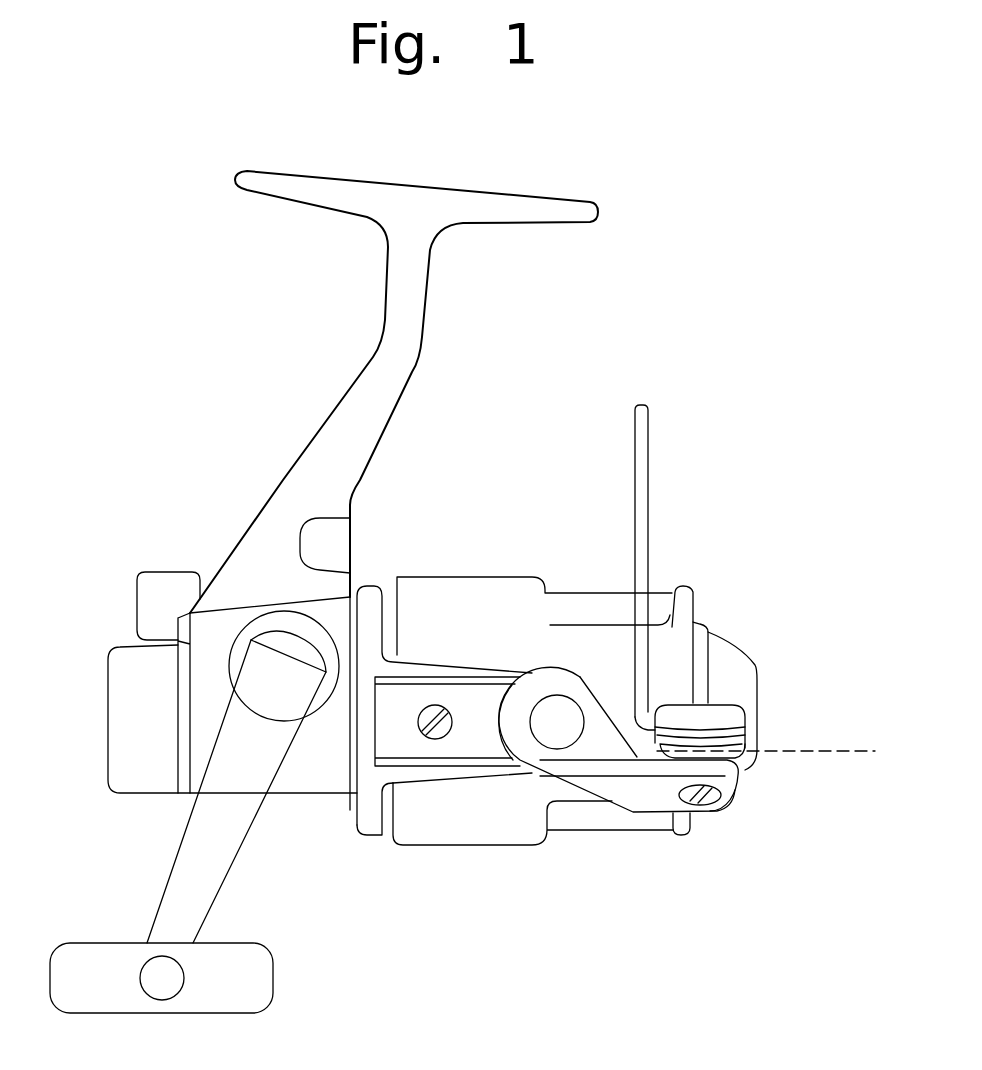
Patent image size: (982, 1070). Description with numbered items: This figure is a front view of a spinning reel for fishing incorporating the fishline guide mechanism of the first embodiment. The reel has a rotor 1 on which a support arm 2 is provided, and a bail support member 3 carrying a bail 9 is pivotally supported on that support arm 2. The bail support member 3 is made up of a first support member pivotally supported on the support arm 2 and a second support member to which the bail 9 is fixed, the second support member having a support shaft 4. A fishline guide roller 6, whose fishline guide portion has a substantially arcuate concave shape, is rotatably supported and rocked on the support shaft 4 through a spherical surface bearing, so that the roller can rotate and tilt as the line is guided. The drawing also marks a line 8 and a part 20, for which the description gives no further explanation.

The rotor 1 is at (370, 587).
The support arm 2 is at (478, 697).
The bail support member 3 is at (650, 795).
The support shaft 4 is at (723, 803).
The fishline guide roller 6 is at (737, 762).
The axis line 8 is at (829, 748).
The bail 9 is at (650, 455).
The engaging tab 20 is at (688, 608).